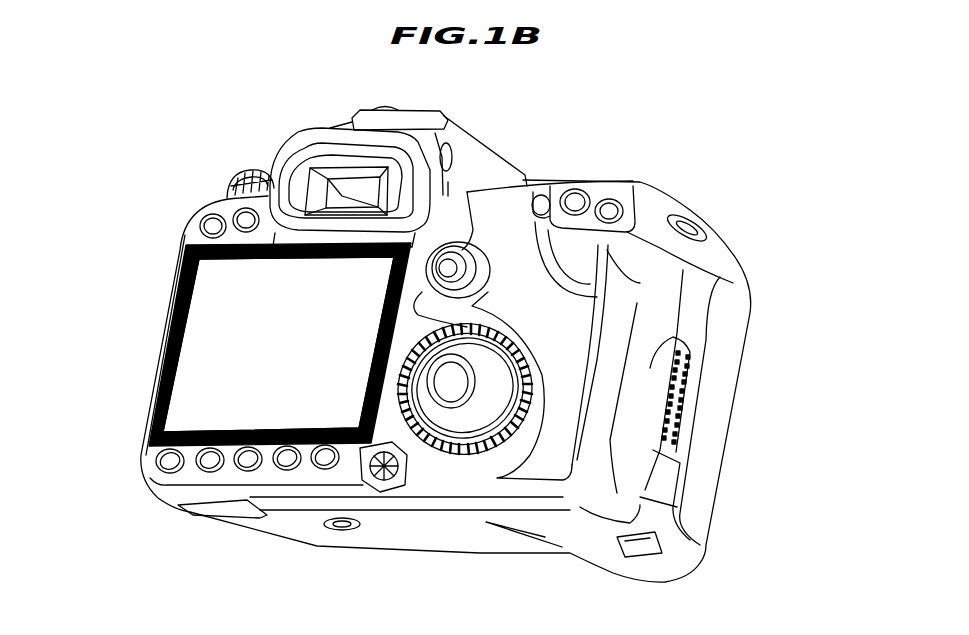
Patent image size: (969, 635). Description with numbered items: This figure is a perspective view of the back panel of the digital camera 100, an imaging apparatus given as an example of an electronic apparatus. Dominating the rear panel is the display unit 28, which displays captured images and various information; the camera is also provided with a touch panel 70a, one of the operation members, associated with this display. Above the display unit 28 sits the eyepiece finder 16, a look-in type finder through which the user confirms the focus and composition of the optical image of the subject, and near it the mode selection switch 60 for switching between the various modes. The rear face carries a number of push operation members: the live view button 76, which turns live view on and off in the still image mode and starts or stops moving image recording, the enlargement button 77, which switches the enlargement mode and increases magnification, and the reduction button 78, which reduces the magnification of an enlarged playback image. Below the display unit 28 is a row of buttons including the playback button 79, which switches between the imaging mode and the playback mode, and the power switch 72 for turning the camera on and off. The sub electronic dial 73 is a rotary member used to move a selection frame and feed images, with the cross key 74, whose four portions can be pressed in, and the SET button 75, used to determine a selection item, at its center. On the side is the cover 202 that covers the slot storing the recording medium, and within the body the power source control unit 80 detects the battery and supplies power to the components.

The digital camera 100 is at (705, 174).
The eyepiece finder 16 is at (350, 200).
The display unit 28 is at (205, 313).
The touch panel 70a is at (210, 362).
The mode selection switch 60 is at (238, 170).
The power source control unit 80 is at (207, 205).
The live view button 76 is at (447, 263).
The enlargement button 77 is at (610, 205).
The reduction button 78 is at (575, 200).
The playback button 79 is at (327, 462).
The power switch 72 is at (390, 472).
The sub electronic dial 73 is at (414, 455).
The cross key 74 is at (440, 417).
The SET button 75 is at (451, 383).
The cover 202 is at (652, 365).